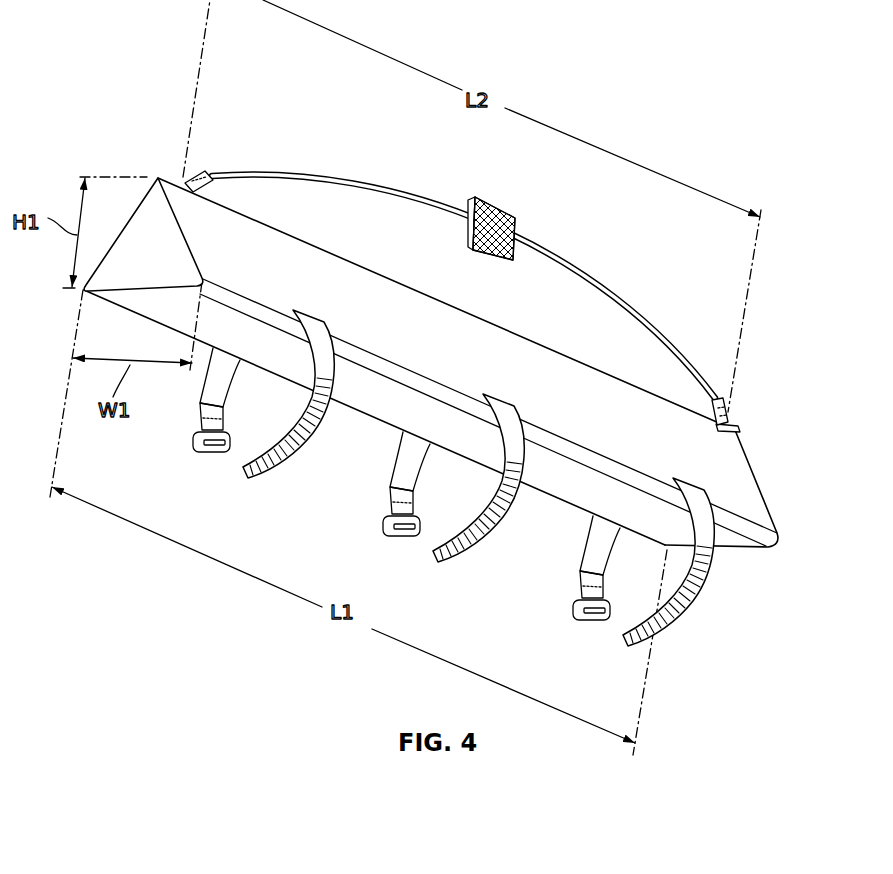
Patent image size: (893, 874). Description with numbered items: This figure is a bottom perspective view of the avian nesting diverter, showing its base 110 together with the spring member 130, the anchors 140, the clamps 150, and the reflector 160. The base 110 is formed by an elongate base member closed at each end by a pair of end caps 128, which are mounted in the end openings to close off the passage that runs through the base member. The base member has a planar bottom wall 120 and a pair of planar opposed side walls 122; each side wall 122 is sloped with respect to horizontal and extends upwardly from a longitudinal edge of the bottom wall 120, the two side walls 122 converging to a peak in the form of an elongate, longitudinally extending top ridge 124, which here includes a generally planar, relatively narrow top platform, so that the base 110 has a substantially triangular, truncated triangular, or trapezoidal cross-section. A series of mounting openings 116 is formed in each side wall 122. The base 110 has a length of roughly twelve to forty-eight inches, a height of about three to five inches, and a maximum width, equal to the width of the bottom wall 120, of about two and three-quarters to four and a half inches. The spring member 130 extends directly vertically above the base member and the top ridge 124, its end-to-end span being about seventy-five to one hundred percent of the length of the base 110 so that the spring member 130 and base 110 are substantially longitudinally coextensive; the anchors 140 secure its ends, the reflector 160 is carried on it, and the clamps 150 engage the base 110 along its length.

The base 110 is at (753, 457).
The mounting openings 116 is at (297, 310).
The bottom wall 120 is at (478, 452).
The side walls 122 is at (253, 238).
The top ridge 124 is at (412, 292).
The end caps 128 is at (155, 226).
The spring member 130 is at (592, 272).
The anchors 140 is at (730, 413).
The clamps 150 is at (302, 457).
The reflector 160 is at (497, 200).